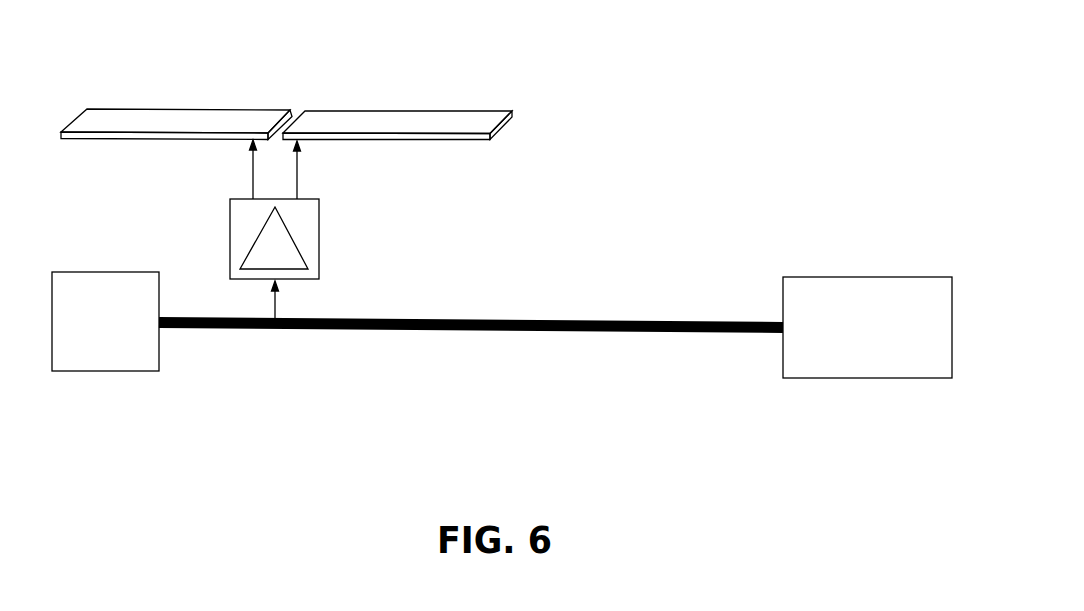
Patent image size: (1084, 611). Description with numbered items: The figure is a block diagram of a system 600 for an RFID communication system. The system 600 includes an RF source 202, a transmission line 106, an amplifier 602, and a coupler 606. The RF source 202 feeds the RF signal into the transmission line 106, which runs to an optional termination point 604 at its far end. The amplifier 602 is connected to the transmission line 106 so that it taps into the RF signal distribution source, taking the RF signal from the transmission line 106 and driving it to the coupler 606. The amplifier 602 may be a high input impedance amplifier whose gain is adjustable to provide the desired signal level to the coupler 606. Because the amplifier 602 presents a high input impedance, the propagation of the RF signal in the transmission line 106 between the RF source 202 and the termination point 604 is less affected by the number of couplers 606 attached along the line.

The system 600 is at (646, 430).
The transmission line 106 is at (247, 343).
The RF source 202 is at (102, 272).
The termination point 604 is at (848, 277).
The amplifier 602 is at (319, 232).
The coupler 606 is at (77, 84).